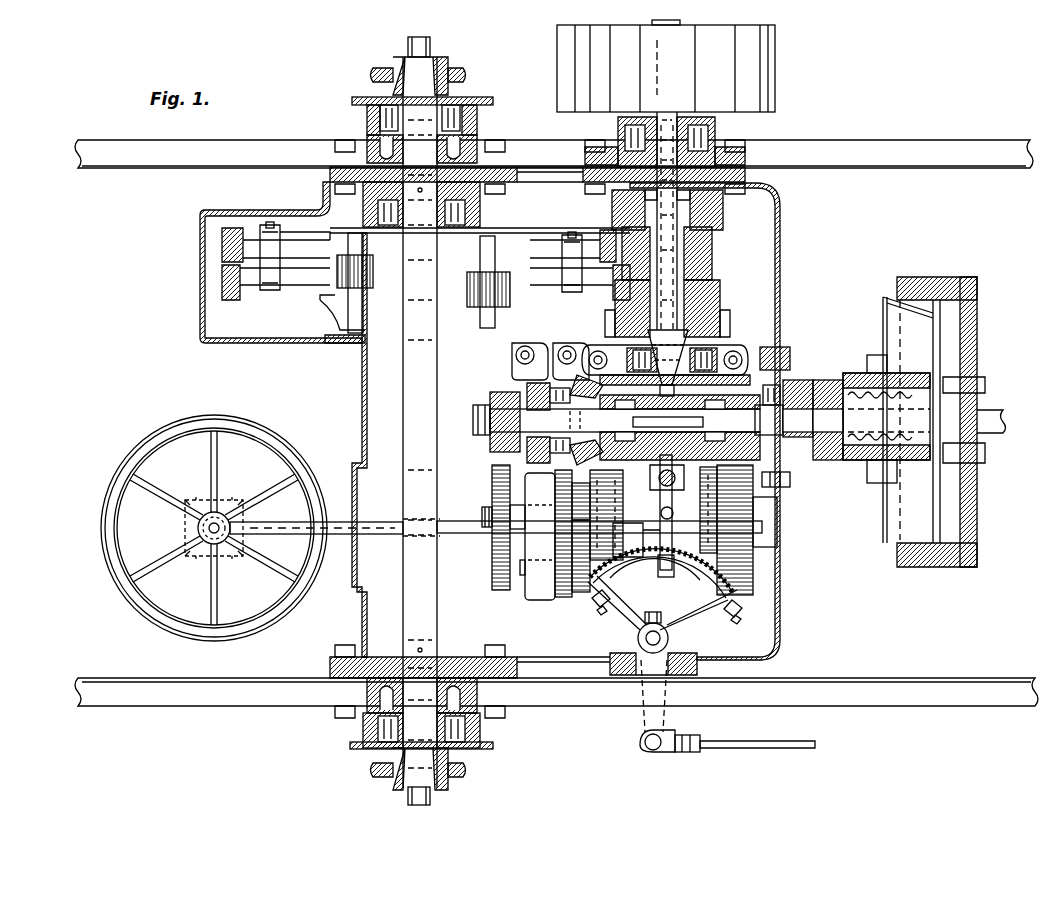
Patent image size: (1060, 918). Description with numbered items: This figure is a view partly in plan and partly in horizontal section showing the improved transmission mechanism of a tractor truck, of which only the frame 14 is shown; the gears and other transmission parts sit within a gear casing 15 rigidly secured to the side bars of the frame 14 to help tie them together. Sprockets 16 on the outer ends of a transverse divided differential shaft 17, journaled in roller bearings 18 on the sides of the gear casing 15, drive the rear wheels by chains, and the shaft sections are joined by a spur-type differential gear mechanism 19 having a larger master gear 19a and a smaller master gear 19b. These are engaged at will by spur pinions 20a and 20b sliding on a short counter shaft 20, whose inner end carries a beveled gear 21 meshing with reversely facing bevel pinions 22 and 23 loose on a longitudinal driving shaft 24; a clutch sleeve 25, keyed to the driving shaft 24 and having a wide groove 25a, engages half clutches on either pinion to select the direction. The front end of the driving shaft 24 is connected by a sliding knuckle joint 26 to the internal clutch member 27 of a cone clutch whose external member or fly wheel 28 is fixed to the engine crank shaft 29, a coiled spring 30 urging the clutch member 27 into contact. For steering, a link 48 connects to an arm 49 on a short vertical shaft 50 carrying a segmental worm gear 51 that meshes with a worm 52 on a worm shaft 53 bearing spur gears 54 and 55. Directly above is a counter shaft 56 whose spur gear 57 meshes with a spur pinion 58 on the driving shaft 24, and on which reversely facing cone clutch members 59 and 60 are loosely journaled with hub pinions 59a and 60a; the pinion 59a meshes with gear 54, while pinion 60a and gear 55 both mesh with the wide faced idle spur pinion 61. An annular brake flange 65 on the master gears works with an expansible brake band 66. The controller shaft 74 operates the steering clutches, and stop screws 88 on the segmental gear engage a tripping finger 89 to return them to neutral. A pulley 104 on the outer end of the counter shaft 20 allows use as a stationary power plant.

The frame 14 is at (192, 152).
The gear casing 15 is at (362, 438).
The sprockets 16 is at (458, 75).
The divided differential shaft 17 is at (415, 405).
The roller bearings 18 is at (385, 95).
The differential gear mechanism 19 is at (352, 283).
The master gear 19a is at (222, 288).
The master gear 19b is at (222, 240).
The counter shaft 20 is at (680, 297).
The spur pinion 20a is at (722, 310).
The spur pinion 20b is at (718, 208).
The beveled gear 21 is at (765, 348).
The bevel pinion 22 is at (582, 345).
The bevel pinion 23 is at (790, 480).
The driving shaft 24 is at (790, 385).
The clutch sleeve 25 is at (660, 445).
The groove 25a is at (676, 390).
The sliding knuckle joint 26 is at (818, 380).
The internal clutch member 27 is at (935, 352).
The fly wheel 28 is at (950, 553).
The engine crank shaft 29 is at (990, 428).
The coiled spring 30 is at (895, 385).
The link 48 is at (770, 750).
The arm 49 is at (640, 738).
The vertical shaft 50 is at (645, 640).
The segmental worm gear 51 is at (683, 612).
The worm 52 is at (733, 597).
The worm shaft 53 is at (392, 535).
The spur gear 54 is at (755, 570).
The spur gear 55 is at (558, 485).
The counter shaft 56 is at (485, 528).
The spur gear 57 is at (492, 492).
The spur pinion 58 is at (515, 395).
The external cone clutch member 59 is at (735, 520).
The spur pinion 59a is at (780, 505).
The external cone clutch member 60 is at (572, 548).
The spur pinion 60a is at (570, 525).
The idle spur pinion 61 is at (573, 585).
The annular brake flange 65 is at (325, 312).
The brake band 66 is at (327, 342).
The shaft 74 is at (672, 470).
The stop screws 88 is at (597, 608).
The tripping finger 89 is at (656, 575).
The pulley 104 is at (750, 70).